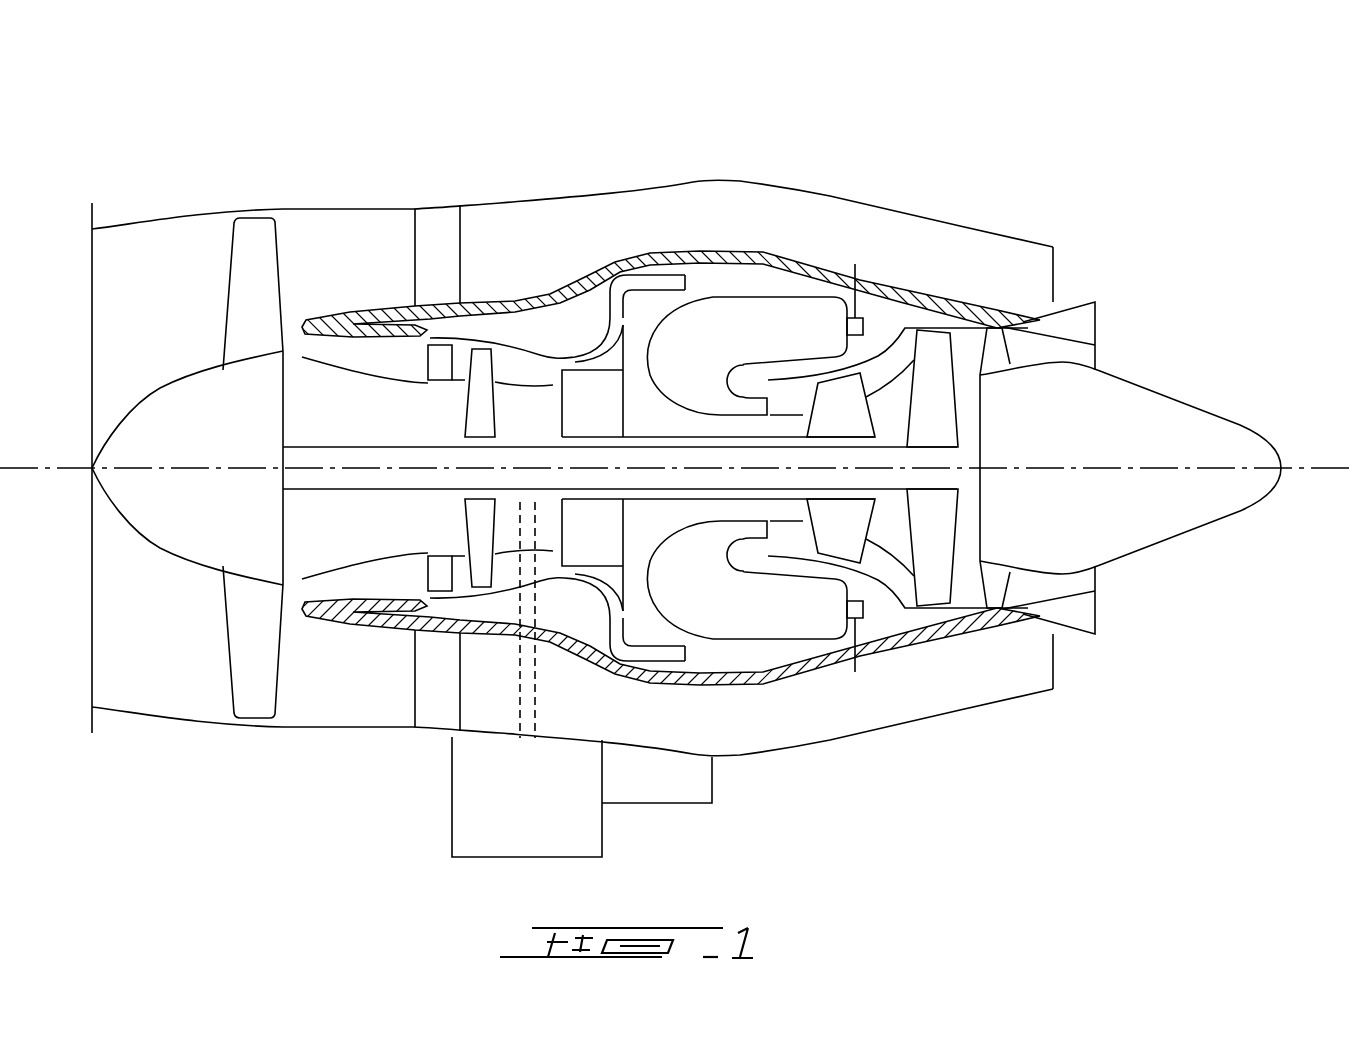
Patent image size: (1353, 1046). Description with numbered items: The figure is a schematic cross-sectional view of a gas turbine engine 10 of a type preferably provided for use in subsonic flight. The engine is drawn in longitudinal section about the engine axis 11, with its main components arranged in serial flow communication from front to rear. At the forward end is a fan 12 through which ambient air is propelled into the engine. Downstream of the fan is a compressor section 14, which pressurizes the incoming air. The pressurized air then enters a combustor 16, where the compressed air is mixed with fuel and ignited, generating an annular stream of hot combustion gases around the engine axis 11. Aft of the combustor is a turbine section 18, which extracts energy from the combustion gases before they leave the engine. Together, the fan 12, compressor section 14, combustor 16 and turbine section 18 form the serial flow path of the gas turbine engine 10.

The gas turbine engine 10 is at (858, 178).
The engine axis 11 is at (1318, 468).
The fan 12 is at (250, 630).
The compressor section 14 is at (517, 352).
The combustor 16 is at (748, 318).
The turbine section 18 is at (888, 538).